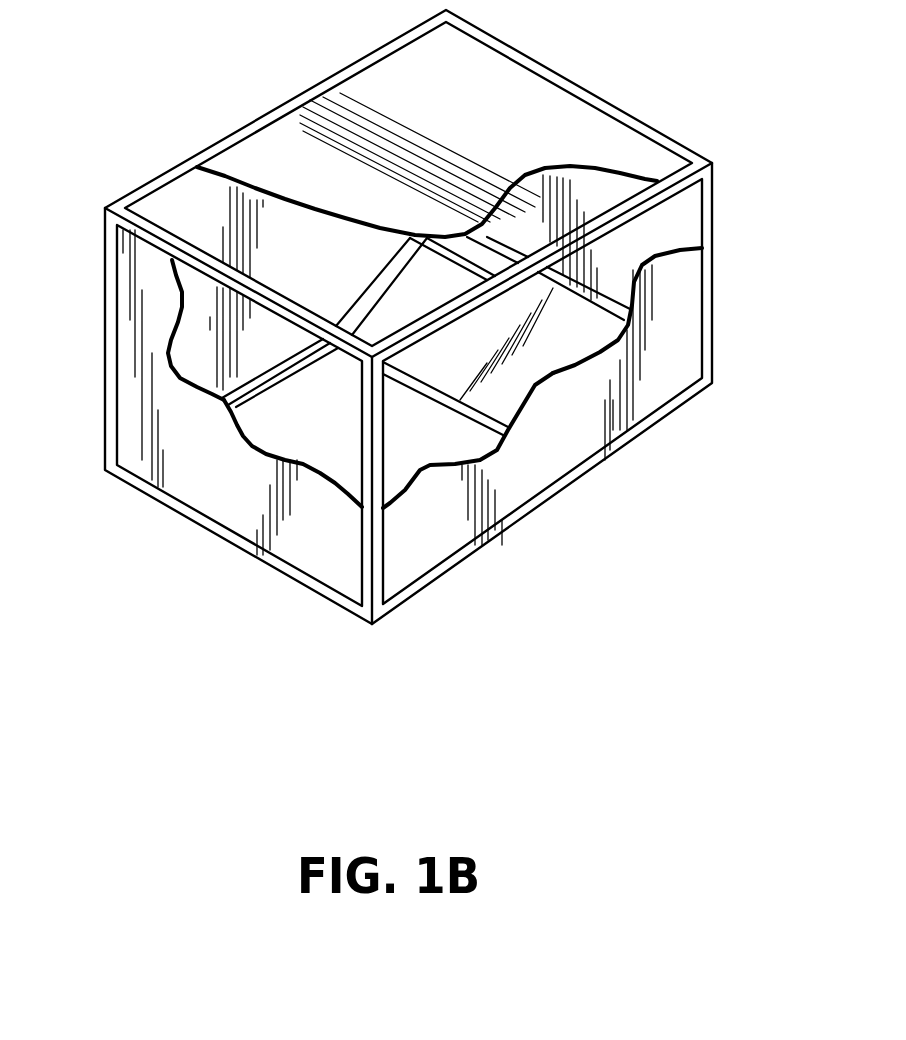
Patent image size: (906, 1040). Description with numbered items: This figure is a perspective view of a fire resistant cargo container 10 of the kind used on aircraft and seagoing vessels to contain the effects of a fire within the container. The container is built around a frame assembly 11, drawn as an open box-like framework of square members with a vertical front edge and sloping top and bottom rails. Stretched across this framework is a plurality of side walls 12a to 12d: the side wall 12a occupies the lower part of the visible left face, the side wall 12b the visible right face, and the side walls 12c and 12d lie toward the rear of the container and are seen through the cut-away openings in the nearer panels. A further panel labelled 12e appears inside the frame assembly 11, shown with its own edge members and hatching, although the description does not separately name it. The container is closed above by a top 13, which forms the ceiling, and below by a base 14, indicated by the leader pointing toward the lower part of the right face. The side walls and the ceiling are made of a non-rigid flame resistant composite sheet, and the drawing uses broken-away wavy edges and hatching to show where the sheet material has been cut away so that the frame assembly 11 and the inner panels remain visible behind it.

The fire resistant cargo container 10 is at (408, 338).
The frame assembly 11 is at (361, 550).
The side wall 12a is at (222, 477).
The side wall 12b is at (570, 462).
The side wall 12c is at (636, 273).
The side wall 12d is at (320, 266).
The inner panel 12e is at (467, 371).
The top 13 is at (484, 109).
The base 14 is at (397, 463).